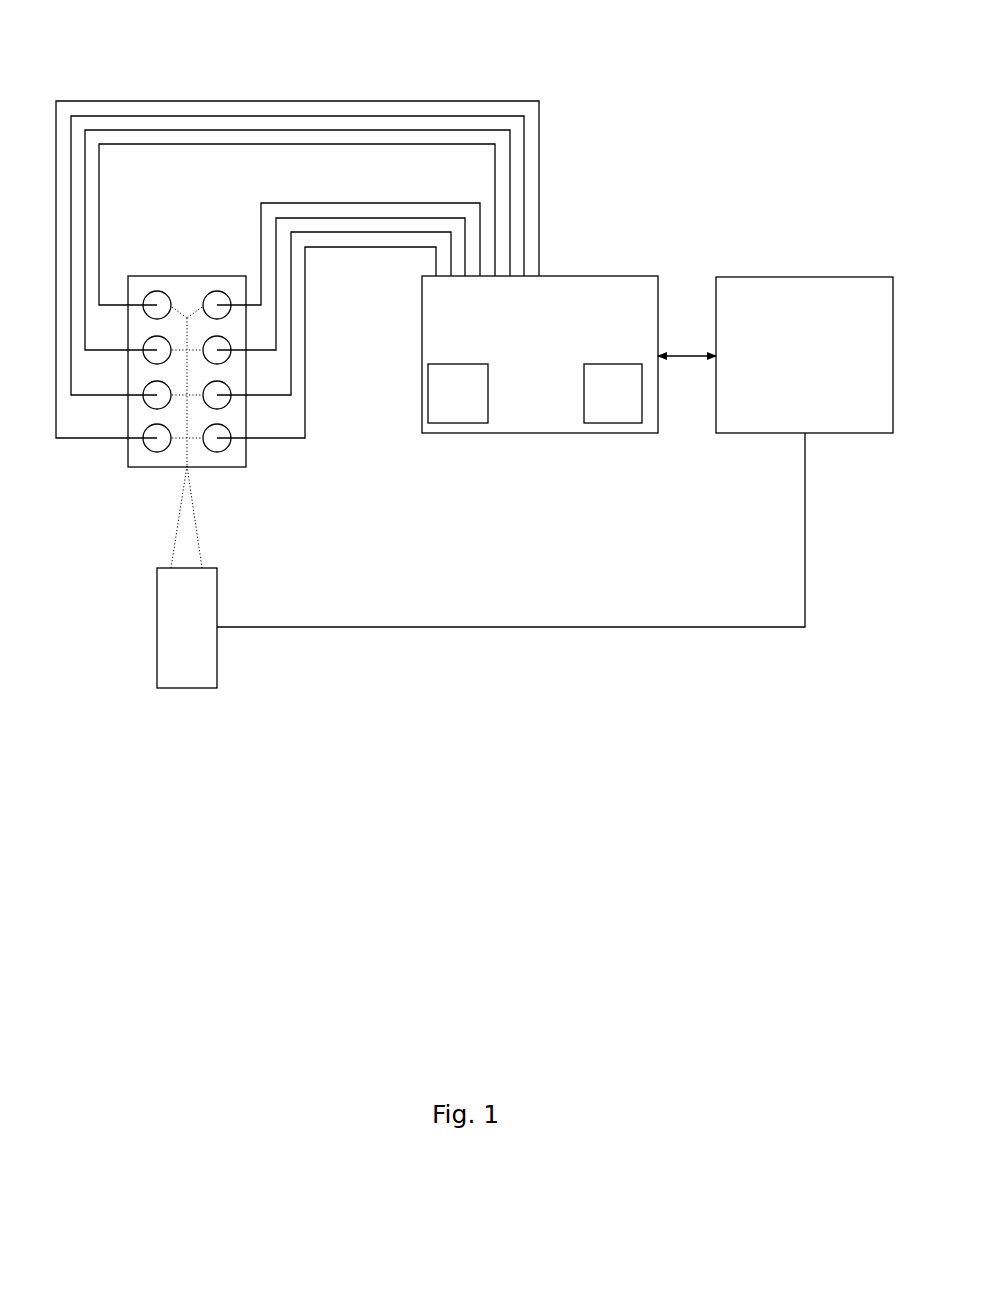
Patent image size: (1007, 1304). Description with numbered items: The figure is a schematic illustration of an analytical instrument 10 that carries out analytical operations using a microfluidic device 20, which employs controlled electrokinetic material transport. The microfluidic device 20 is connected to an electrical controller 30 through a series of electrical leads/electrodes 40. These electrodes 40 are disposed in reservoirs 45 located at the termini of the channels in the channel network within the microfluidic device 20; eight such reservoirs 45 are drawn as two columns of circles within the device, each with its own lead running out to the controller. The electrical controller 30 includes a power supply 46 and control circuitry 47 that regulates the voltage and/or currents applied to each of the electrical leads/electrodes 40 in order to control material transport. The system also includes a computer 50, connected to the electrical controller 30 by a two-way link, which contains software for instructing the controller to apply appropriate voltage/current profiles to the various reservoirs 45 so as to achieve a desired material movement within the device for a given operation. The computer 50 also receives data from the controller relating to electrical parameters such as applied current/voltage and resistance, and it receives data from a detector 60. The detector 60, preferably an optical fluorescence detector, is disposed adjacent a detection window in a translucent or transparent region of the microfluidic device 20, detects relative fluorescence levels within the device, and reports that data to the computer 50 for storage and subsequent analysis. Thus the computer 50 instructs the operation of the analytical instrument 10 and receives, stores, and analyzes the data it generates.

The analytical instrument 10 is at (629, 100).
The microfluidic device 20 is at (187, 276).
The electrical controller 30 is at (529, 366).
The electrical leads/electrodes 40 is at (335, 92).
The reservoirs 45 is at (155, 322).
The power supply 46 is at (448, 404).
The control circuitry 47 is at (603, 404).
The computer 50 is at (793, 367).
The detector 60 is at (177, 638).